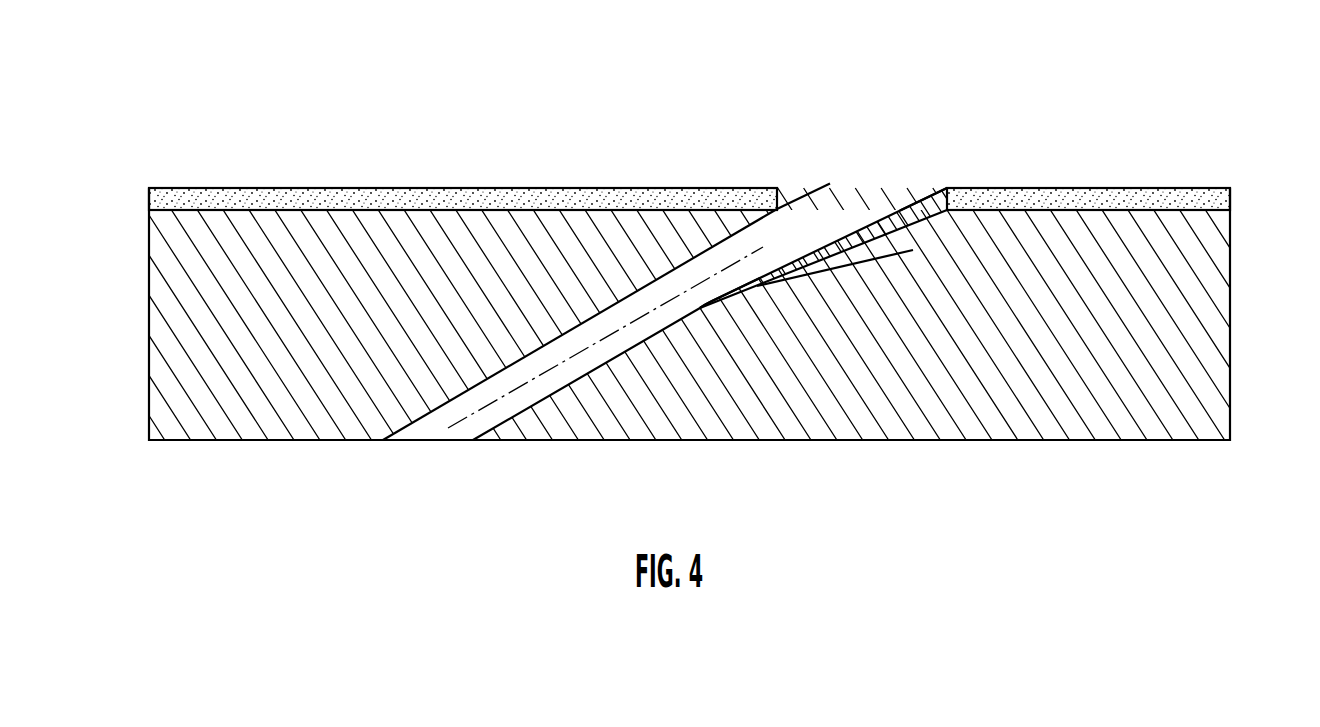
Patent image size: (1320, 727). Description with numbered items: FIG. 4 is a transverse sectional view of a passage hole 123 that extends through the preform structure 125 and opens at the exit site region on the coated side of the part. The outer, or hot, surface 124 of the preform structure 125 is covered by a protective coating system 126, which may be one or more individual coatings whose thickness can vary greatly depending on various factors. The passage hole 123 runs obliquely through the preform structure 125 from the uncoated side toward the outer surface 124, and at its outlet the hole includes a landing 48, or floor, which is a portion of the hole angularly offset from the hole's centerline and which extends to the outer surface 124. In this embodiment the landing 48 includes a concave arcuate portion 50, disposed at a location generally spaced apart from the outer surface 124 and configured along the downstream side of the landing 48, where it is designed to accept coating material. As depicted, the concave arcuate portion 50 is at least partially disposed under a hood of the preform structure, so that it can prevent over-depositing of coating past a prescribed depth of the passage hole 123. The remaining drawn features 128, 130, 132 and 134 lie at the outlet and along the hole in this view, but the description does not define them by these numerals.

The passage hole 123 is at (1019, 97).
The outer surface 124 is at (171, 205).
The preform structure 125 is at (1231, 315).
The protective coating system 126 is at (1125, 197).
The lip 128 is at (897, 205).
The diffuser surface 130 is at (872, 260).
The lip edge 132 is at (921, 192).
The hole axis 134 is at (463, 432).
The landing 48 is at (807, 270).
The concave arcuate portion 50 is at (748, 300).